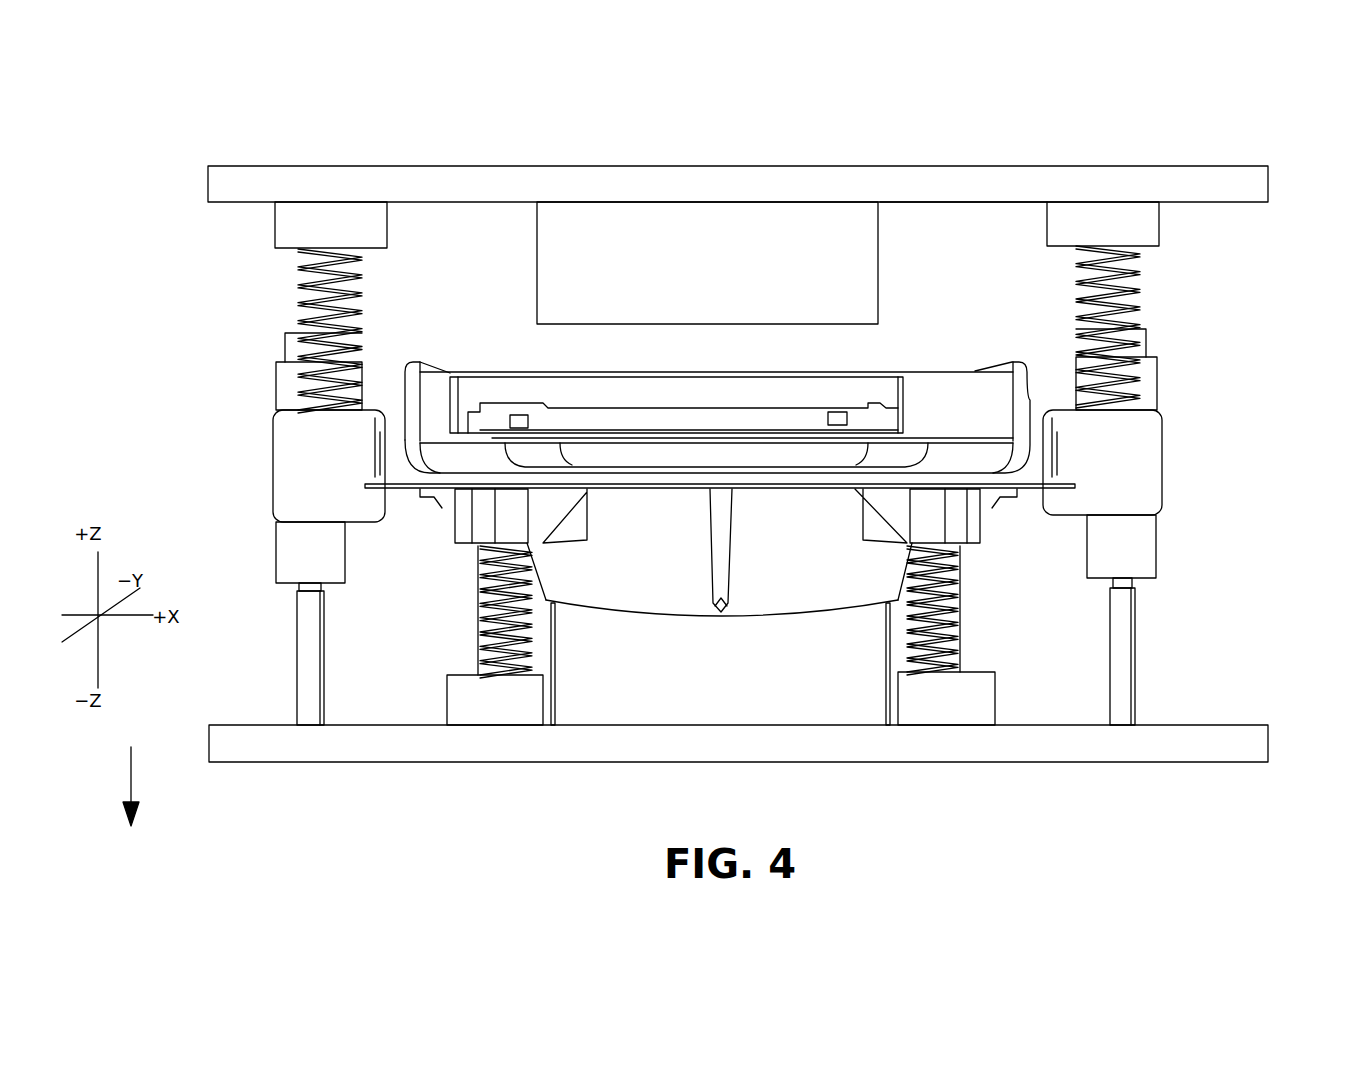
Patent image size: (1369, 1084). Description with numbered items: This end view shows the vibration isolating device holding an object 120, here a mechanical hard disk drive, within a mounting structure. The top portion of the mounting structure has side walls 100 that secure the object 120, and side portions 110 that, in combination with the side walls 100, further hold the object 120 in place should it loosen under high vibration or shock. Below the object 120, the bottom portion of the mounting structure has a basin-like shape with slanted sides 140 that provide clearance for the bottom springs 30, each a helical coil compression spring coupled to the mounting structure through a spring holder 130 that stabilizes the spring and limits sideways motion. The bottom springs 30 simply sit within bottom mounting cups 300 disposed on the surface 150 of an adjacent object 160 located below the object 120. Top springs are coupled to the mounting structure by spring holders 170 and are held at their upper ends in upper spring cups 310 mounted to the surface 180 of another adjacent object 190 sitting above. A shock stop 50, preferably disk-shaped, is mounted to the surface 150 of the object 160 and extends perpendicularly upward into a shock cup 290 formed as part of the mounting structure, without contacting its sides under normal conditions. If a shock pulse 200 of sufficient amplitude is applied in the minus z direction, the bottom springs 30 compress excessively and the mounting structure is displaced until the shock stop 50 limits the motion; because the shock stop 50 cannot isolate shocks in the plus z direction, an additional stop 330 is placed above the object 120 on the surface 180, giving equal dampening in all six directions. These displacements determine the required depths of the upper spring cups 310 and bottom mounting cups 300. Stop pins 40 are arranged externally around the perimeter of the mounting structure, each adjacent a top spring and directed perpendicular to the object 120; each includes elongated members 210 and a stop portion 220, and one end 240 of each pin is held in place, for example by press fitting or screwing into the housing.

The bottom springs 30 is at (480, 598).
The stop pins 40 is at (252, 392).
The shock stop 50 is at (888, 650).
The side walls 100 is at (412, 362).
The side portions 110 is at (448, 503).
The object 120 is at (928, 358).
The spring holder 130 is at (470, 558).
The slanted sides 140 is at (475, 620).
The surface 150 is at (1192, 708).
The adjacent object 160 is at (745, 746).
The spring holder 170 is at (273, 468).
The surface 180 is at (918, 212).
The adjacent object 190 is at (1220, 178).
The shock pulse 200 is at (144, 775).
The elongated members 210 is at (285, 345).
The stop portion 220 is at (302, 553).
The end 240 is at (297, 621).
The shock cup 290 is at (800, 615).
The bottom mounting cups 300 is at (425, 711).
The upper spring cup 310 is at (387, 219).
The stop 330 is at (578, 212).